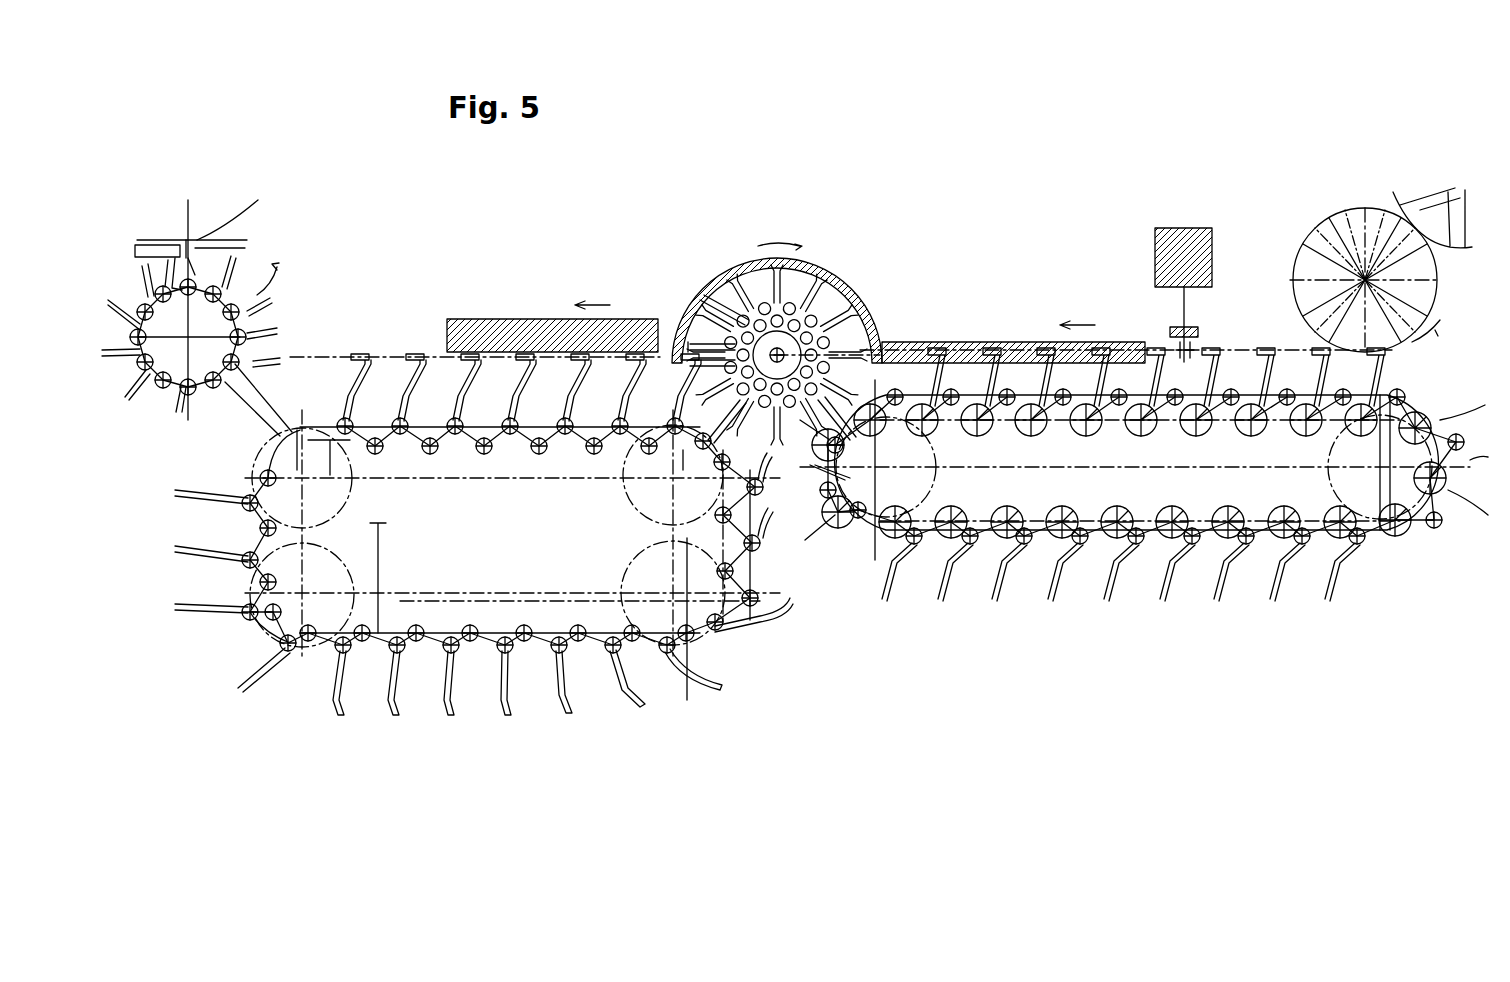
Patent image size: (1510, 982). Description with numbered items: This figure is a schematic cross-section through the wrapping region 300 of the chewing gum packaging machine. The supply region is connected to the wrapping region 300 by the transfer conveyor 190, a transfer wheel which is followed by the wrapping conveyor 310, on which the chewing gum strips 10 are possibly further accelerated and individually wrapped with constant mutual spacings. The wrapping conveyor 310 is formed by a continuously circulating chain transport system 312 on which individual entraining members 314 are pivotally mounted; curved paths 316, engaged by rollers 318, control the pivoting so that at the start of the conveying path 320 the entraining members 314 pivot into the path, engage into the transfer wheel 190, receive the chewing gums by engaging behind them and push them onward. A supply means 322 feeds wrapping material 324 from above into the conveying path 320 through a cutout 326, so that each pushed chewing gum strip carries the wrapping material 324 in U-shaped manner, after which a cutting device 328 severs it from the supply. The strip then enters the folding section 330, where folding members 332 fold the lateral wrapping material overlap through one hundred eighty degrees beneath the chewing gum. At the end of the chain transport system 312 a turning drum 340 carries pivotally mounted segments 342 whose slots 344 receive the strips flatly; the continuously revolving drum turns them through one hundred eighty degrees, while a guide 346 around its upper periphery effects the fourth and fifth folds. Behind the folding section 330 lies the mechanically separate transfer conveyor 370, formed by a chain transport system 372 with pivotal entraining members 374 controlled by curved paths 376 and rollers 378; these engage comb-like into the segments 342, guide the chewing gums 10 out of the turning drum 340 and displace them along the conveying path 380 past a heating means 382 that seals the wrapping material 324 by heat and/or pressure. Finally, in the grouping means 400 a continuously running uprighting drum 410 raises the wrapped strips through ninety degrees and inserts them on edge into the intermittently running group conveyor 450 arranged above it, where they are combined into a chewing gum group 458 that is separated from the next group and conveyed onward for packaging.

The chewing gum strips 10 is at (332, 350).
The transfer conveyor 190 is at (1340, 222).
The wrapping region 300 is at (1060, 200).
The wrapping conveyor 310 is at (1144, 512).
The chain transport system 312 is at (1072, 590).
The entraining members 314 is at (1030, 580).
The curved paths 316 is at (878, 585).
The rollers 318 is at (975, 575).
The conveying path 320 is at (1288, 345).
The supply means 322 is at (1158, 262).
The wrapping material 324 is at (1178, 312).
The cutout 326 is at (1194, 346).
The cutting device 328 is at (1196, 328).
The folding section 330 is at (975, 292).
The folding members 332 is at (900, 340).
The turning drum 340 is at (751, 316).
The segments 342 is at (762, 258).
The slots 344 is at (700, 300).
The guide 346 is at (752, 292).
The transfer conveyor 370 is at (484, 542).
The chain transport system 372 is at (376, 640).
The entraining members 374 is at (258, 665).
The curved paths 376 is at (660, 665).
The rollers 378 is at (600, 655).
The conveying path 380 is at (375, 355).
The heating means 382 is at (496, 318).
The grouping means 400 is at (183, 130).
The uprighting drum 410 is at (178, 350).
The group conveyor 450 is at (235, 222).
The chewing gum group 458 is at (166, 240).